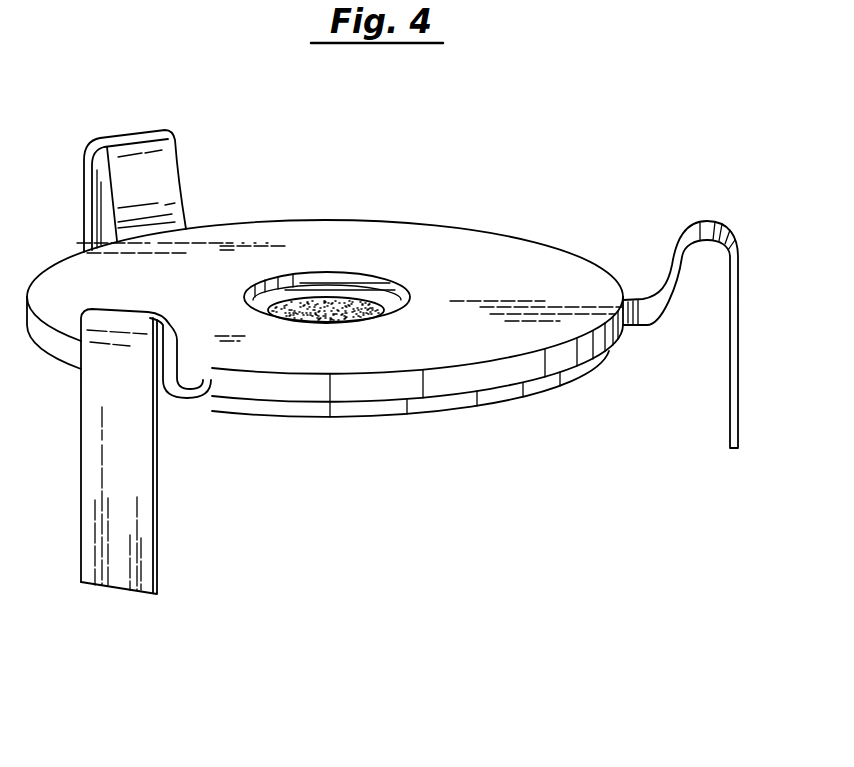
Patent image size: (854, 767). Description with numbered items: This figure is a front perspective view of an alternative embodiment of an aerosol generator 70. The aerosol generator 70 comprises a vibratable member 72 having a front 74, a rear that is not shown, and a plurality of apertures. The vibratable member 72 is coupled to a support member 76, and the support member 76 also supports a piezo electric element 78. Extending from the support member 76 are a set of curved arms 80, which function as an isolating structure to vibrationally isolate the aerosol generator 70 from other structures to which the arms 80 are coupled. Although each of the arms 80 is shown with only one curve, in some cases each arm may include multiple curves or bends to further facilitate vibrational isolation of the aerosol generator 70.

The aerosol generator 70 is at (507, 212).
The vibratable member 72 is at (358, 307).
The front 74 is at (304, 300).
The support member 76 is at (453, 352).
The piezo electric element 78 is at (390, 416).
The curved arms 80 is at (160, 190).